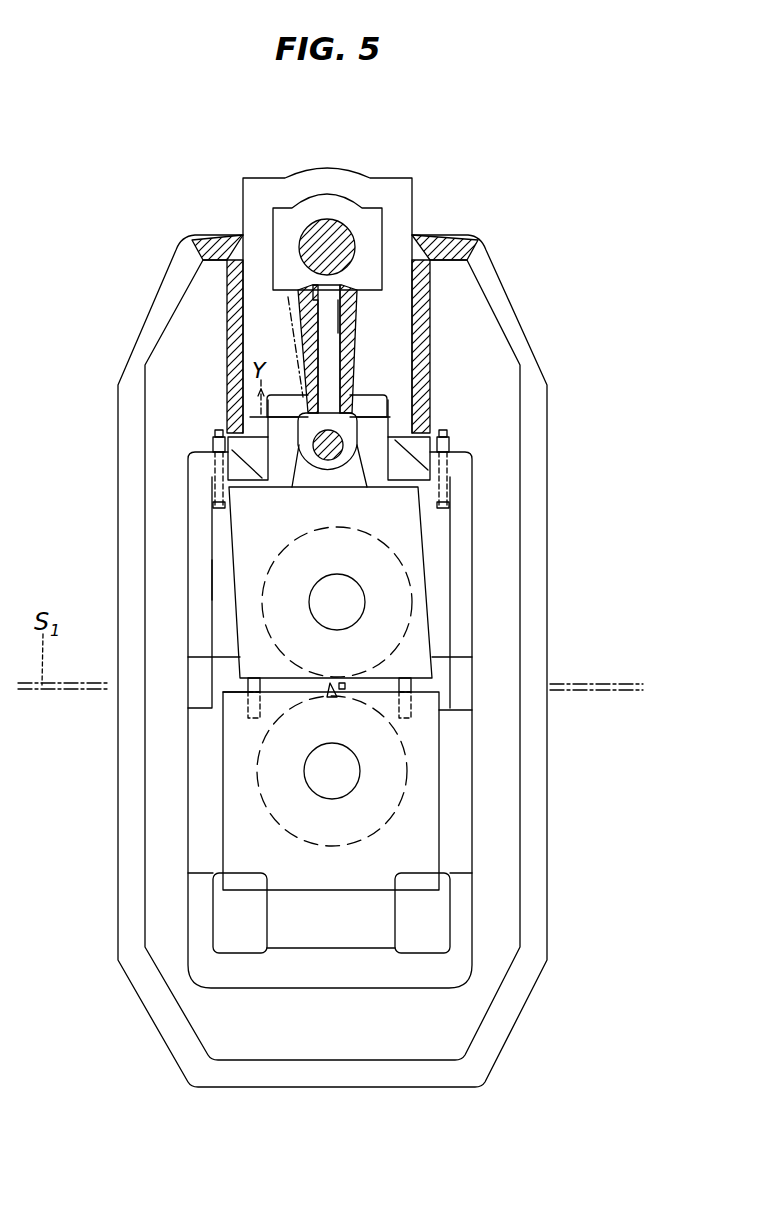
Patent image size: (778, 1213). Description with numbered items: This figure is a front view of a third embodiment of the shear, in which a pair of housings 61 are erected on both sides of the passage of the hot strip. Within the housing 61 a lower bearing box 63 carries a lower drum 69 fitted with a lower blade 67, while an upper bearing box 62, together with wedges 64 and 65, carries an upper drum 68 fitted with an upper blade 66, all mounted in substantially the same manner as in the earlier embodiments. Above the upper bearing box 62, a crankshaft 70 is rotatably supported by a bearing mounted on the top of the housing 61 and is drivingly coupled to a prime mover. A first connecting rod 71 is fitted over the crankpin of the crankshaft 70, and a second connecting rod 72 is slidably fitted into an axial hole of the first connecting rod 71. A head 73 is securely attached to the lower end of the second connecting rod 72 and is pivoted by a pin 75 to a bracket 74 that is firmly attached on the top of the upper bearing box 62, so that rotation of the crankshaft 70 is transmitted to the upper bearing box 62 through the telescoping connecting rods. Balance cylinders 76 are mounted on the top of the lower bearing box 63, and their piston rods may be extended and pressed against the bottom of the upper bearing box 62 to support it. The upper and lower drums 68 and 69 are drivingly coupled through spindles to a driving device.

The housing 61 is at (520, 330).
The upper bearing box 62 is at (243, 513).
The lower bearing box 63 is at (235, 765).
The wedge 64 is at (217, 572).
The wedge 65 is at (460, 552).
The upper blade 66 is at (345, 686).
The lower blade 67 is at (322, 684).
The upper drum 68 is at (357, 605).
The lower drum 69 is at (313, 782).
The crankshaft 70 is at (345, 243).
The first connecting rod 71 is at (350, 320).
The second connecting rod 72 is at (327, 317).
The head 73 is at (355, 420).
The bracket 74 is at (303, 473).
The pin 75 is at (340, 448).
The balance cylinder 76 is at (253, 708).